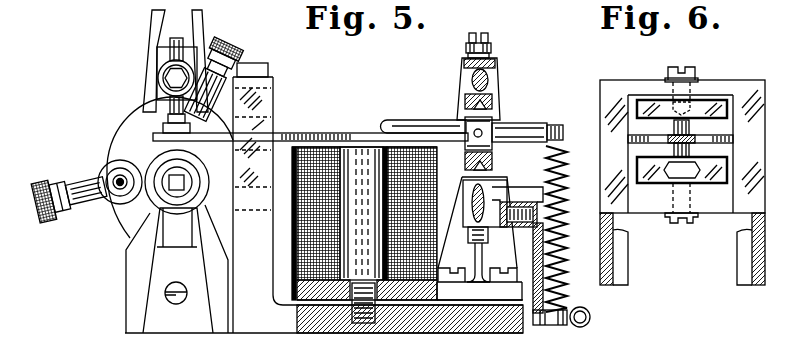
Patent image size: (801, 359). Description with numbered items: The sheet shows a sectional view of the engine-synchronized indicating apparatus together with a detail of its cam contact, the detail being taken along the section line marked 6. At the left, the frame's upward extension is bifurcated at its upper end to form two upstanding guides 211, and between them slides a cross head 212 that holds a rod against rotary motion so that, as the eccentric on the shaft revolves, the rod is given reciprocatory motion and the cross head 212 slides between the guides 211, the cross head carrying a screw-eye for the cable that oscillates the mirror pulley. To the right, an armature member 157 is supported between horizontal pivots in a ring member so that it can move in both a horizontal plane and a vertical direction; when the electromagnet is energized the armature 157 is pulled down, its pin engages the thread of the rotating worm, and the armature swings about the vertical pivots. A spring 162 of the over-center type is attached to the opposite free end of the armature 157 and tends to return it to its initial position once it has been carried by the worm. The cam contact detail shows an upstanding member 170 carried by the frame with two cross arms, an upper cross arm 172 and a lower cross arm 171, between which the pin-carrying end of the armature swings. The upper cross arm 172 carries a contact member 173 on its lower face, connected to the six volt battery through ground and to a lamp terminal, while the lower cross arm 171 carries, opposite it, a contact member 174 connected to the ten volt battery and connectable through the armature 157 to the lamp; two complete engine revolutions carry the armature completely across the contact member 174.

In FIG. 5, the upstanding guides 211 is at (150, 16).
In FIG. 5, the slide member or cross head 212 is at (165, 50).
In FIG. 5, the armature member 157 is at (422, 130).
In FIG. 5, the spring 162 is at (560, 287).
In FIG. 5, the section line 6- 6 is at (268, 63).
In FIG. 6, the upstanding member 170 is at (746, 277).
In FIG. 6, the lower cross arm 171 is at (718, 208).
In FIG. 6, the upper cross arm 172 is at (663, 100).
In FIG. 6, the contact member 173 is at (723, 100).
In FIG. 6, the contact member 174 is at (689, 167).